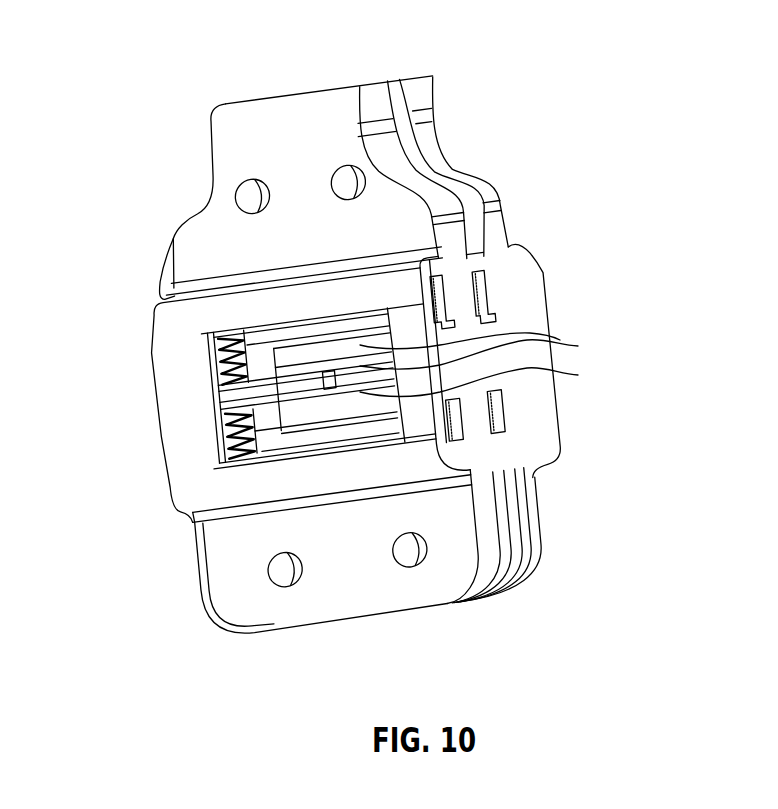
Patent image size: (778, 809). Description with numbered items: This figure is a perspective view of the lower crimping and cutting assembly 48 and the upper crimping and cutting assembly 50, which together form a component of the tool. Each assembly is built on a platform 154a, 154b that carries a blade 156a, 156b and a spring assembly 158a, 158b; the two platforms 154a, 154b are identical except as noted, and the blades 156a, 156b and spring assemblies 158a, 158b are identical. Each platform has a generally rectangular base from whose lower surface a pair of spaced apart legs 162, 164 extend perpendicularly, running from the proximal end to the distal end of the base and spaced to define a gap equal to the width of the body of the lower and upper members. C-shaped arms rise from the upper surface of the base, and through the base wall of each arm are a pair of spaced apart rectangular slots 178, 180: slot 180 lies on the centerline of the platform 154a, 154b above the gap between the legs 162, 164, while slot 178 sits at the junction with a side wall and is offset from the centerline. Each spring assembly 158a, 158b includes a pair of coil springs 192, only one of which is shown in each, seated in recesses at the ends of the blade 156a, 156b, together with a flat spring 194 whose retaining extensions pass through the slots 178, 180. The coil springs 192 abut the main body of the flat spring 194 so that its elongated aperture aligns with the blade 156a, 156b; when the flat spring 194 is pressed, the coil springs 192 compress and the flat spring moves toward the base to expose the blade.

The lower crimping and cutting assembly 48 is at (558, 456).
The upper crimping and cutting assembly 50 is at (502, 201).
The platform 154a is at (547, 513).
The platform 154b is at (527, 290).
The blade 156a is at (343, 417).
The blade 156b is at (343, 353).
The spring assembly 158a is at (221, 436).
The spring assembly 158b is at (218, 374).
The leg 162 is at (310, 118).
The leg 164 is at (423, 113).
The slot 178 is at (466, 422).
The slot 180 is at (505, 424).
The coil spring 192 is at (213, 353).
The flat spring 194 is at (490, 363).